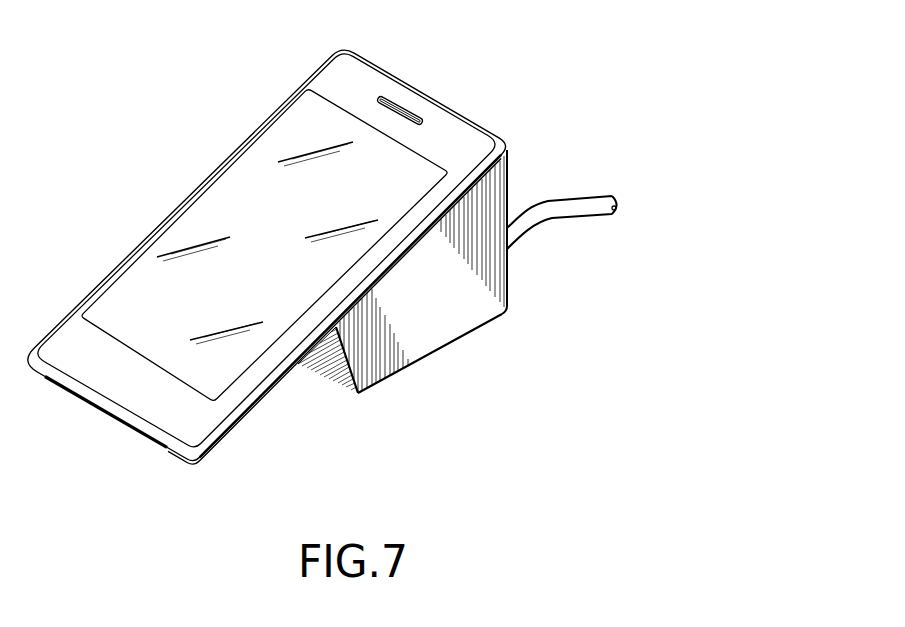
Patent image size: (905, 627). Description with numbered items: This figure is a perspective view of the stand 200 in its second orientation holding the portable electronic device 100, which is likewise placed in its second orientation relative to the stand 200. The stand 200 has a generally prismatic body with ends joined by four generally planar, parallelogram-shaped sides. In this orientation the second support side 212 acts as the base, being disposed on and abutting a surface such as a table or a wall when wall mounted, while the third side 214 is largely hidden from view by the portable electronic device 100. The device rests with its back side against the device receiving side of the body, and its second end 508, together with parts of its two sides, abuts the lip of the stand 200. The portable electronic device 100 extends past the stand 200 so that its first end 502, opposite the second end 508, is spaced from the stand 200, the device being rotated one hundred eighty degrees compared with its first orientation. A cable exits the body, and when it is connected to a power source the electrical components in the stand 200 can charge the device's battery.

The portable electronic device 100 is at (298, 243).
The stand 200 is at (444, 302).
The second support side 212 is at (403, 372).
The third side 214 is at (330, 358).
The first end 502 is at (100, 397).
The second end 508 is at (450, 107).